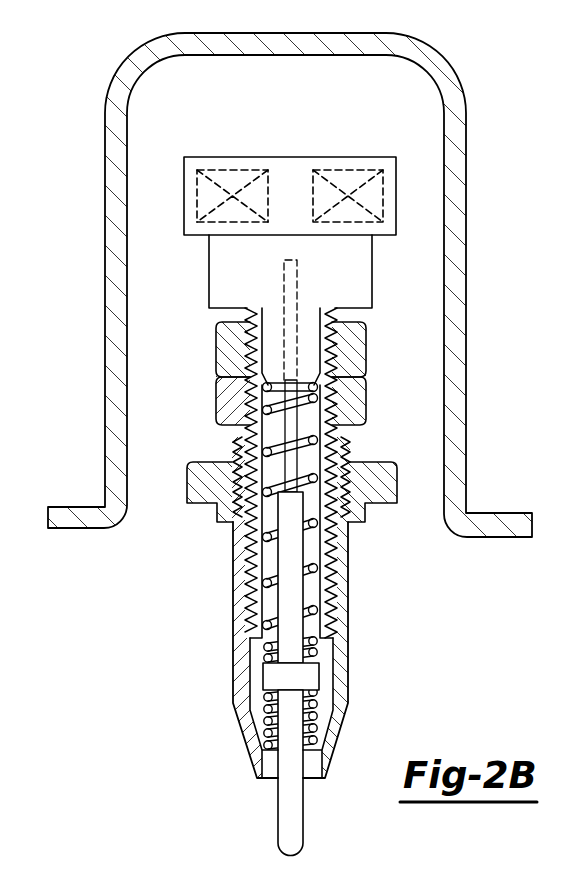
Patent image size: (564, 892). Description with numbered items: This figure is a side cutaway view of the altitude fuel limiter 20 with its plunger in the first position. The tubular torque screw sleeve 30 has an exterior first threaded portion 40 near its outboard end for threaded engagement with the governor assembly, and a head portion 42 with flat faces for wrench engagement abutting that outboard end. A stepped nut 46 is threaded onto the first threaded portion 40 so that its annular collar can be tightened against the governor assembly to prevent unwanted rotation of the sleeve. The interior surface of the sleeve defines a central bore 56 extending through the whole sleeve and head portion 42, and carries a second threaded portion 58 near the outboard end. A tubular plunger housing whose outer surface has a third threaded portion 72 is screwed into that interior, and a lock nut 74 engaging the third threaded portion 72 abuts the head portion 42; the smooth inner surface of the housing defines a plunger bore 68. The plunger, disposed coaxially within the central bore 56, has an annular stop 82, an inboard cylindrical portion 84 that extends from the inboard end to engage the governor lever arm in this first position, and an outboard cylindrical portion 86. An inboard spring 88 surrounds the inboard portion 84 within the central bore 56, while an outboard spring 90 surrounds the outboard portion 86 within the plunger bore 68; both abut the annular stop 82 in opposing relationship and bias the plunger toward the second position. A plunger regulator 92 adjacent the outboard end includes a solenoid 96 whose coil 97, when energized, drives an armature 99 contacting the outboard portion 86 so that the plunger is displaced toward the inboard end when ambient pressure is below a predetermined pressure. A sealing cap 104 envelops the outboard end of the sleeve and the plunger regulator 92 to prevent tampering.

The altitude fuel limiter 20 is at (494, 121).
The sealing cap 104 is at (105, 150).
The plunger regulator 92 is at (174, 158).
The coil 97 is at (228, 180).
The solenoid 96 is at (209, 274).
The lock nut 74 is at (216, 350).
The third threaded portion 72 is at (333, 357).
The head portion 42 is at (216, 403).
The plunger bore 68 is at (303, 423).
The second threaded portion 58 is at (250, 440).
The first threaded portion 40 is at (343, 455).
The stepped nut 46 is at (187, 484).
The armature 99 is at (290, 463).
The outboard spring 90 is at (318, 525).
The outboard cylindrical portion 86 is at (288, 562).
The torque screw sleeve 30 is at (233, 592).
The annular stop 82 is at (318, 672).
The inboard spring 88 is at (318, 708).
The central bore 56 is at (255, 697).
The inboard cylindrical portion 84 is at (285, 830).